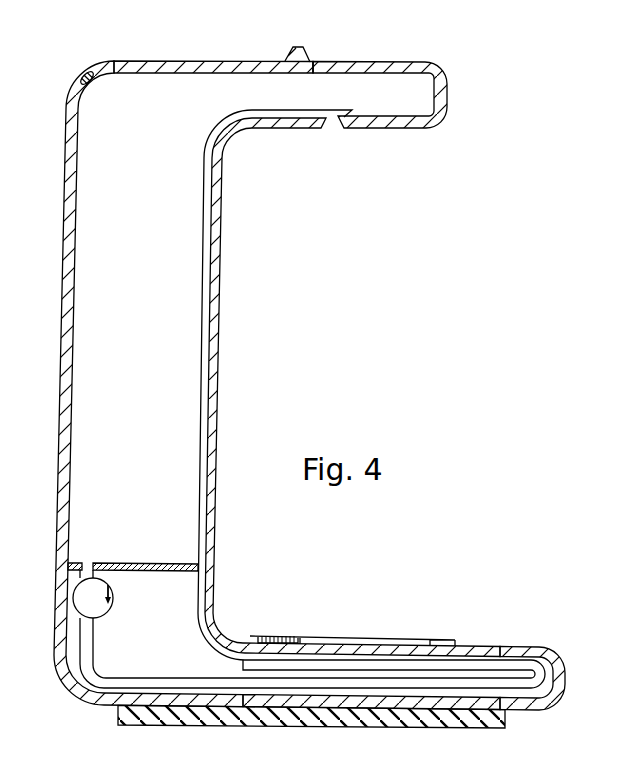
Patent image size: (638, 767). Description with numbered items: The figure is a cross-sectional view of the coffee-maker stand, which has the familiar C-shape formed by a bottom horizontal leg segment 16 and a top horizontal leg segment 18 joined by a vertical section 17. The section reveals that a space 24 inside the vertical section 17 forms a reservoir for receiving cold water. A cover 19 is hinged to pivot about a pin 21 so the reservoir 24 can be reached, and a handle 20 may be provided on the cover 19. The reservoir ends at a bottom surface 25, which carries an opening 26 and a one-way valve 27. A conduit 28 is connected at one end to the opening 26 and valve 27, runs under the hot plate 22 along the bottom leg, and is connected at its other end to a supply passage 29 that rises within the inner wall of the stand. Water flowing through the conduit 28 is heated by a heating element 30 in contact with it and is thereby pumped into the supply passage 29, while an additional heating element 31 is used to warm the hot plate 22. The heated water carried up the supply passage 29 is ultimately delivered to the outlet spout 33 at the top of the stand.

The bottom leg segment 16 is at (569, 704).
The vertical section 17 is at (64, 246).
The top leg segment 18 is at (401, 58).
The cover 19 is at (216, 60).
The handle 20 is at (301, 47).
The pin 21 is at (83, 76).
The hot plate 22 is at (373, 638).
The space 24 is at (95, 390).
The bottom surface 25 is at (165, 563).
The opening 26 is at (89, 563).
The one-way valve 27 is at (114, 599).
The conduit 28 is at (175, 686).
The supply passage 29 is at (203, 370).
The heating element 30 is at (518, 682).
The additional heating element 31 is at (520, 670).
The outlet spout 33 is at (334, 131).